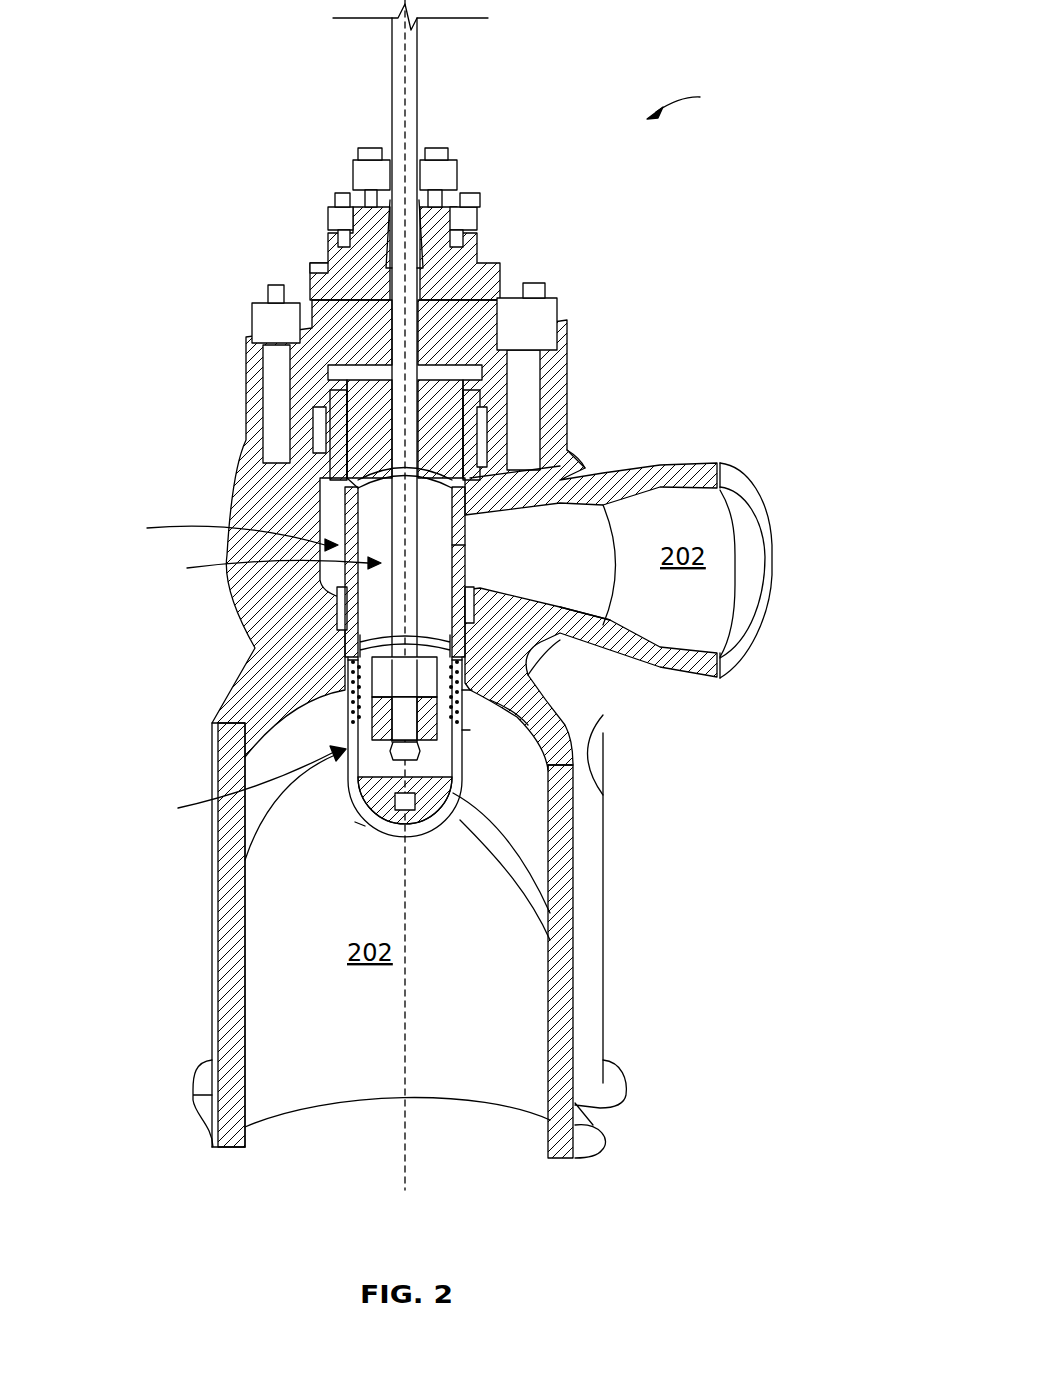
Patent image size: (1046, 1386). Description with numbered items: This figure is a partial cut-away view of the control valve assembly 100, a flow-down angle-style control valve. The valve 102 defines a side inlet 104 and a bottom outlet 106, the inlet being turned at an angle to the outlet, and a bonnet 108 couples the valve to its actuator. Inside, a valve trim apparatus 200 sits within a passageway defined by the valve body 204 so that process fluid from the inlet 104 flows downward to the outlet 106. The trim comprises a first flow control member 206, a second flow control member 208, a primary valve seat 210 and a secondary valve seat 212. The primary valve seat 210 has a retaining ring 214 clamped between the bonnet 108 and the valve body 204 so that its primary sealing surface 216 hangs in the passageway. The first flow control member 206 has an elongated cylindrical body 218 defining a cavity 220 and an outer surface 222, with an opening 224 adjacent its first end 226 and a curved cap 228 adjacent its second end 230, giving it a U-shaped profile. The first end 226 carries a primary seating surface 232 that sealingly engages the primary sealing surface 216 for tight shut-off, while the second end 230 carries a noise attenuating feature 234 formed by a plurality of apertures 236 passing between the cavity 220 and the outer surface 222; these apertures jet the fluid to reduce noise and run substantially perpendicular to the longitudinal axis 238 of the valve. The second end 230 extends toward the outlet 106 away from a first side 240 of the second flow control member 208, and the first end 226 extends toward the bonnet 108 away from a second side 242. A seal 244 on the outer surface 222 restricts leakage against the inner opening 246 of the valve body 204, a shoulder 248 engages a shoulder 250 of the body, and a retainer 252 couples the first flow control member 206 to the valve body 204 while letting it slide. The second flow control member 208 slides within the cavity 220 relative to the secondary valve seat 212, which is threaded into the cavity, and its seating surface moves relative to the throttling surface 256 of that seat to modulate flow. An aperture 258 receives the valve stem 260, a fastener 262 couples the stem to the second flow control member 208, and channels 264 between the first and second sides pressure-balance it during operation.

The control valve assembly 100 is at (698, 101).
The valve 102 is at (213, 877).
The inlet 104 is at (773, 563).
The outlet 106 is at (298, 1112).
The bonnet 108 is at (246, 356).
The valve trim apparatus 200 is at (222, 532).
The valve body 204 is at (237, 608).
The first flow control member 206 is at (375, 528).
The second flow control member 208 is at (503, 705).
The primary valve seat 210 is at (340, 443).
The secondary valve seat 212 is at (345, 608).
The retaining ring 214 is at (560, 355).
The primary sealing surface 216 is at (487, 433).
The body 218 is at (450, 548).
The cavity 220 is at (295, 605).
The outer surface 222 is at (545, 663).
The opening 224 is at (375, 515).
The first end 226 is at (517, 478).
The cap 228 is at (455, 800).
The second end 230 is at (462, 757).
The primary seating surface 232 is at (567, 460).
The noise attenuating feature 234 is at (222, 885).
The apertures 236 is at (458, 690).
The longitudinal axis 238 is at (405, 1178).
The first side 240 is at (453, 473).
The second side 242 is at (362, 823).
The seal 244 is at (350, 662).
The opening 246 is at (357, 718).
The shoulder 248 is at (553, 625).
The shoulder 250 is at (460, 667).
The retainer 252 is at (470, 595).
The throttling surface 256 is at (347, 664).
The aperture 258 is at (240, 803).
The valve stem 260 is at (392, 92).
The fastener 262 is at (418, 800).
The channels 264 is at (460, 730).